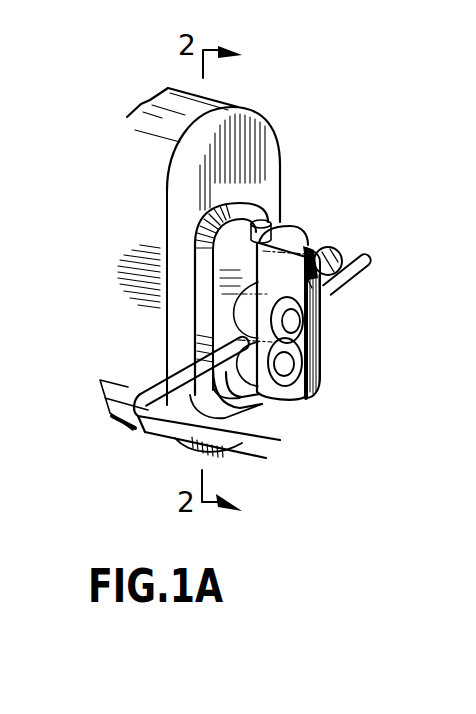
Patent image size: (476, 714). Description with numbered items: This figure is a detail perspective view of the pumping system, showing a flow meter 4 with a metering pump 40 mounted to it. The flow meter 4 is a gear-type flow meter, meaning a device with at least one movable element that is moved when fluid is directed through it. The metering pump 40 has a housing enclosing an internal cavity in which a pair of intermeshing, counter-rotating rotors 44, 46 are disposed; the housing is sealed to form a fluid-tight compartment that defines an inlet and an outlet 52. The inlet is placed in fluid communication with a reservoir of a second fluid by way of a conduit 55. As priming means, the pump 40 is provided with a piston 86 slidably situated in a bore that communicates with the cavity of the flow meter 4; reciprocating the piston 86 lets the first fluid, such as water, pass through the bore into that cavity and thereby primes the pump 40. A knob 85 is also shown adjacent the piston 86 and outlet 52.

The flow meter 4 is at (246, 104).
The metering pump 40 is at (323, 360).
The rotor 44 is at (300, 410).
The rotor 46 is at (304, 327).
The outlet 52 is at (330, 300).
The conduit 55 is at (133, 431).
The knob 85 is at (316, 240).
The piston 86 is at (272, 226).